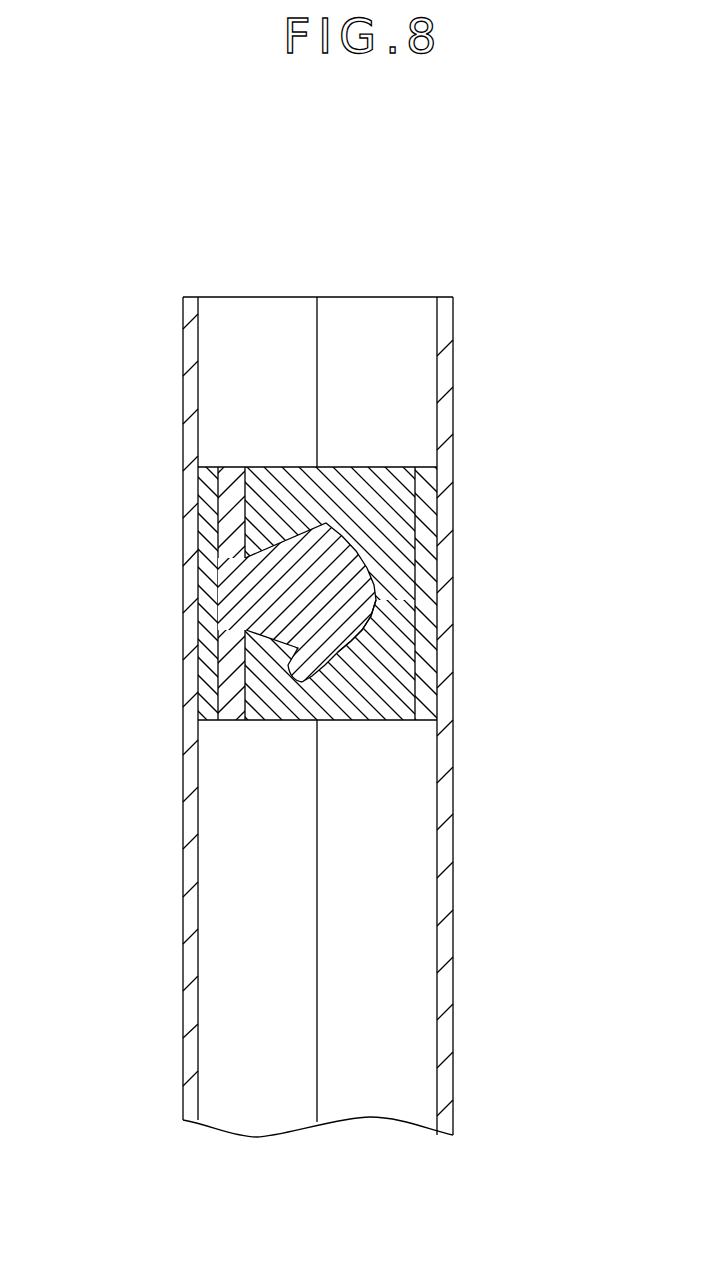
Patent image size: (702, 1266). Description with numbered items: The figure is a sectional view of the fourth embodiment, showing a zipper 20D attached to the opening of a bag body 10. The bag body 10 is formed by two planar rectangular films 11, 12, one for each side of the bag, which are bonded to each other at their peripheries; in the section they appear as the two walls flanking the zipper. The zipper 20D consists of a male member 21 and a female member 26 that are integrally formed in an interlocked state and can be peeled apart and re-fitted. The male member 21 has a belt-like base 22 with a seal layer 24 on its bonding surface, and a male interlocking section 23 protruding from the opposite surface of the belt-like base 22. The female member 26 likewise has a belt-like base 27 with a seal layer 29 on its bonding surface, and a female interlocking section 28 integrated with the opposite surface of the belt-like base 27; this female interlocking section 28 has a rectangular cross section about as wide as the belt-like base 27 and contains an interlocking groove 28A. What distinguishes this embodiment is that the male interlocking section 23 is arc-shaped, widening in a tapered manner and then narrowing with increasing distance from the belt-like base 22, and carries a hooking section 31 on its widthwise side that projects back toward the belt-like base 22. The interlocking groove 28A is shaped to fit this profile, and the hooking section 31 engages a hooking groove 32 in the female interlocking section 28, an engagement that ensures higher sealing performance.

The bag body 10 is at (190, 960).
The film 11 is at (190, 1107).
The film 12 is at (448, 1117).
The zipper 20D is at (493, 772).
The male member 21 is at (103, 415).
The belt-like base 22 is at (232, 495).
The male interlocking section 23 is at (305, 560).
The seal layer 24 is at (210, 550).
The female member 26 is at (522, 412).
The belt-like base 27 is at (397, 517).
The female interlocking section 28 is at (330, 503).
The interlocking groove 28A is at (353, 638).
The seal layer 29 is at (427, 572).
The hooking section 31 is at (298, 657).
The hooking groove 32 is at (290, 672).